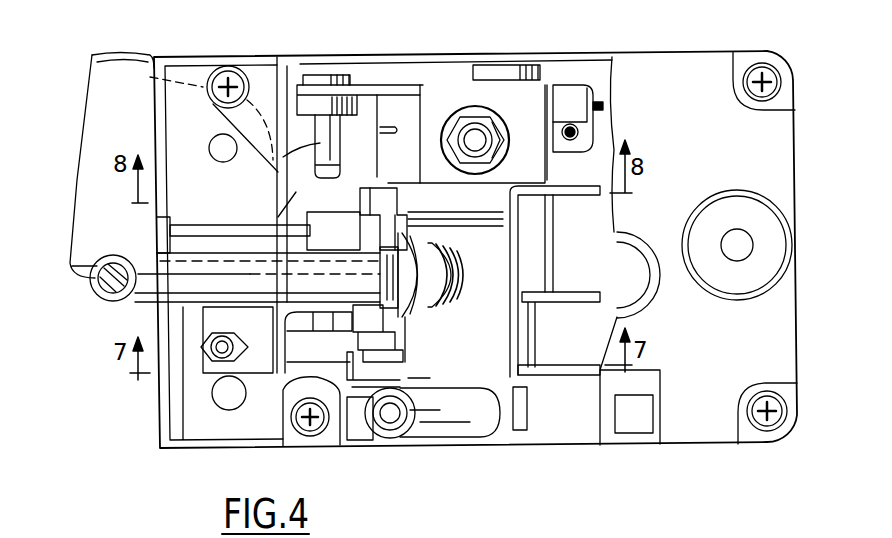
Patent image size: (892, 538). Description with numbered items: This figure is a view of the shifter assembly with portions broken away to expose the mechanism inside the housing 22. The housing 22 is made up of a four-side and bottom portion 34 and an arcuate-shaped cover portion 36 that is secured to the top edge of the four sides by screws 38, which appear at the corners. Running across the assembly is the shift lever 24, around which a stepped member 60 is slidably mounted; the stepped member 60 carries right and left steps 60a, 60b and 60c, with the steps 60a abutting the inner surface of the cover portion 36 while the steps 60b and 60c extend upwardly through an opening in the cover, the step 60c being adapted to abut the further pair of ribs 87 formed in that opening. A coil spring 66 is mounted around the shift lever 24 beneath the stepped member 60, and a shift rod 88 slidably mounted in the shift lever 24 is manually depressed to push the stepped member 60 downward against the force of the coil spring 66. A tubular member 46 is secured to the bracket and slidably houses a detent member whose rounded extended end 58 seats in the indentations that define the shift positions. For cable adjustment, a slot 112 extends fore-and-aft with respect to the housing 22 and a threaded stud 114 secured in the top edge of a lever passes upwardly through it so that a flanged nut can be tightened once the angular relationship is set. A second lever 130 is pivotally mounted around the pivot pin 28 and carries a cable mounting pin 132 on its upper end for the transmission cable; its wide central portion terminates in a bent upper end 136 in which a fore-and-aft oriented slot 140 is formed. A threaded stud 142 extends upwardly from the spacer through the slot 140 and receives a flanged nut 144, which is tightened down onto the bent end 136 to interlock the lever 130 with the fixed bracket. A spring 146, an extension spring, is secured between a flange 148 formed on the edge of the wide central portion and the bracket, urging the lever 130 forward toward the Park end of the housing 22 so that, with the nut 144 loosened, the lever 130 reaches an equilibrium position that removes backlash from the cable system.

The housing 22 is at (268, 55).
The shift lever 24 is at (128, 258).
The pivot pin 28 is at (527, 425).
The four-side and bottom portion 34 is at (523, 58).
The cover portion 36 is at (670, 55).
The screws 38 is at (212, 78).
The tubular member 46 is at (443, 433).
The extended end 58 is at (383, 421).
The stepped member 60 is at (366, 256).
The step 60a is at (147, 268).
The step 60b is at (356, 208).
The step 60c is at (405, 180).
The coil spring 66 is at (453, 307).
The ribs 87 is at (622, 290).
The shift rod 88 is at (103, 298).
The slot 112 is at (246, 335).
The threaded stud 114 is at (197, 355).
The lever 130 is at (365, 58).
The cable mounting pin 132 is at (270, 163).
The bent upper end 136 is at (434, 96).
The slot 140 is at (528, 111).
The threaded stud 142 is at (478, 151).
The flanged nut 144 is at (473, 110).
The spring 146 is at (578, 132).
The flange 148 is at (598, 106).